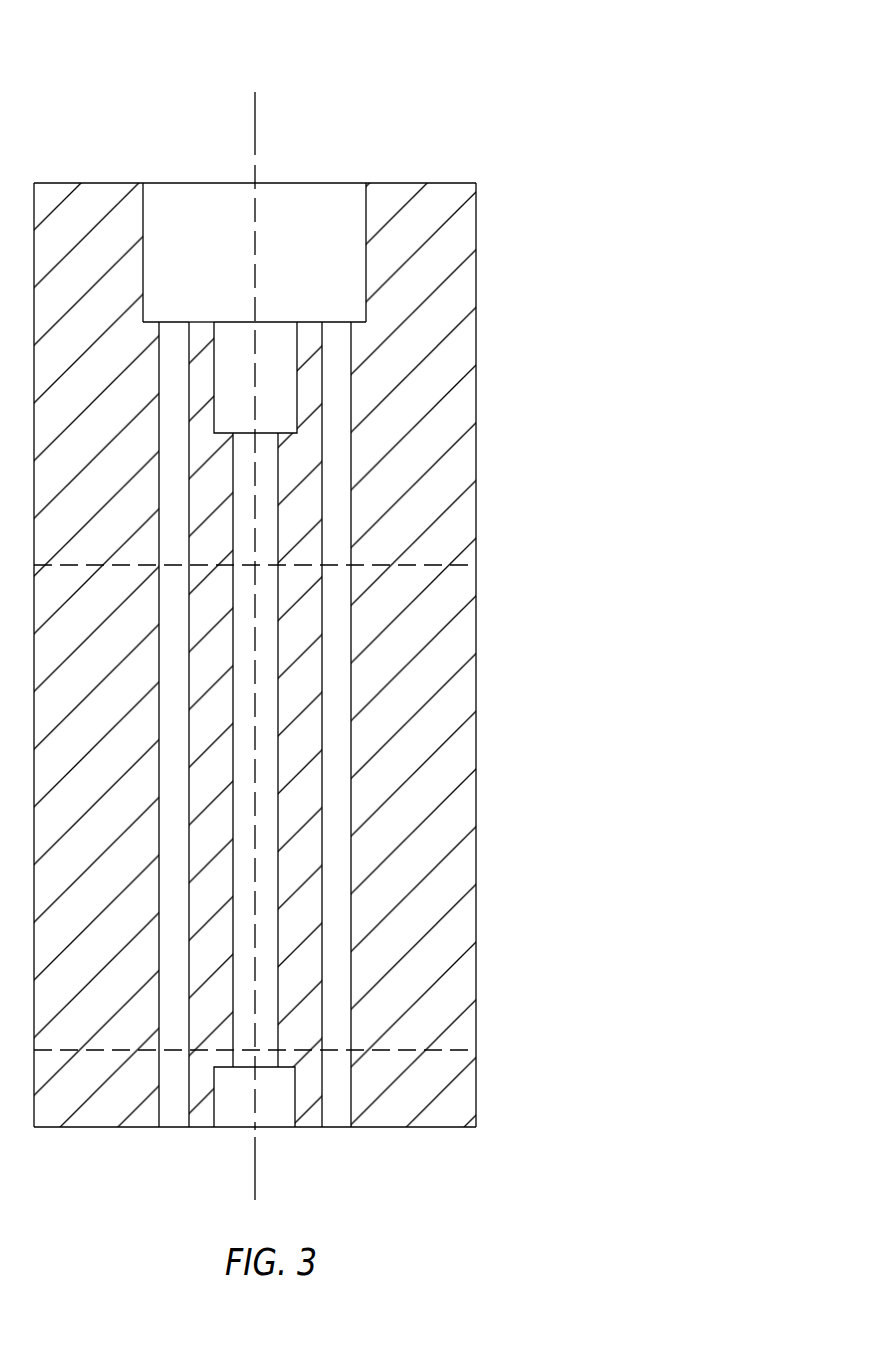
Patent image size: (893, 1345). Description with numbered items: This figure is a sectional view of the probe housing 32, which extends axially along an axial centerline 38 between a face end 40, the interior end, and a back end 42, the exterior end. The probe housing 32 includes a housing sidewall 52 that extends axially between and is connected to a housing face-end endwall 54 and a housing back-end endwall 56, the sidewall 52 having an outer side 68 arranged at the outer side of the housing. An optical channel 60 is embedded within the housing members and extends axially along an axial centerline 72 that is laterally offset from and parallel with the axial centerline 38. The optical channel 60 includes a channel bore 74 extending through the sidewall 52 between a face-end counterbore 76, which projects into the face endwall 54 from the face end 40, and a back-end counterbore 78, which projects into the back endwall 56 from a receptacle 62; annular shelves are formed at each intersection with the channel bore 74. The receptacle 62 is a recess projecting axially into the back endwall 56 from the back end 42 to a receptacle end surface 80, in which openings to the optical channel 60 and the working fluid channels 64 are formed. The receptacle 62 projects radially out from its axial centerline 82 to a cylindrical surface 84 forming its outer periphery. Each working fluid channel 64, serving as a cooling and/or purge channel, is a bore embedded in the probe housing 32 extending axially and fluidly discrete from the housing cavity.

The probe housing 32 is at (308, 606).
The axial centerline 38 is at (172, 646).
The face end 40 is at (445, 1130).
The back end 42 is at (452, 183).
The housing sidewall 52 is at (495, 797).
The housing face-end endwall 54 is at (495, 1083).
The housing back-end endwall 56 is at (492, 287).
The optical channel 60 is at (293, 495).
The receptacle 62 is at (333, 218).
The working fluid channel 64 is at (147, 660).
The outer side of the sidewall 68 is at (477, 877).
The axial centerline of the optical channel 72 is at (172, 646).
The channel bore 74 is at (278, 722).
The face-end counterbore 76 is at (296, 1105).
The back-end counterbore 78 is at (297, 367).
The receptacle end surface 80 is at (202, 322).
The axial centerline of the receptacle 82 is at (252, 107).
The surface forming outer periphery of the receptacle 84 is at (366, 213).